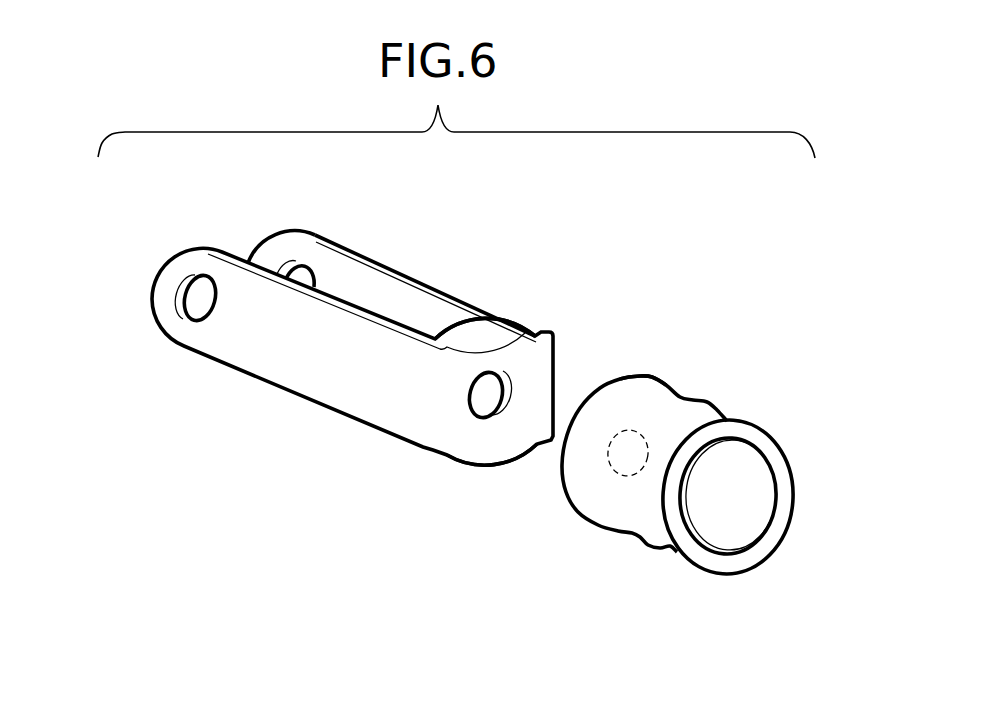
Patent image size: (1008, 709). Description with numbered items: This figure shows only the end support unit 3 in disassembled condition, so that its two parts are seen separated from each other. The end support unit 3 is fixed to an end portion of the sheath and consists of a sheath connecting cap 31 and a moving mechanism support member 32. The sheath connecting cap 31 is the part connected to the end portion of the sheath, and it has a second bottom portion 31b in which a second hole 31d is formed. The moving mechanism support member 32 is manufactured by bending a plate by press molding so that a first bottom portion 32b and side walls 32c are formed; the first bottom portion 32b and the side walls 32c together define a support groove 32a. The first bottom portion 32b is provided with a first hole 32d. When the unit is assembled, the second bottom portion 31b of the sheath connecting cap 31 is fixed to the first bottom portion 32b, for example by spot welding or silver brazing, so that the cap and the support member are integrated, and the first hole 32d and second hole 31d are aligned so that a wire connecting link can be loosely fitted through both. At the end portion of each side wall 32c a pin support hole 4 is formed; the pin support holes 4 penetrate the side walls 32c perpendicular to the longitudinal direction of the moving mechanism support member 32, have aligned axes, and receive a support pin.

The end support unit 3 is at (594, 325).
The pin support hole 4 is at (185, 318).
The sheath connecting cap 31 is at (631, 537).
The second bottom portion 31b is at (622, 378).
The second hole 31d is at (615, 455).
The moving mechanism support member 32 is at (351, 426).
The support groove 32a is at (440, 305).
The first bottom portion 32b is at (485, 457).
The side wall 32c is at (364, 250).
The first hole 32d is at (505, 392).